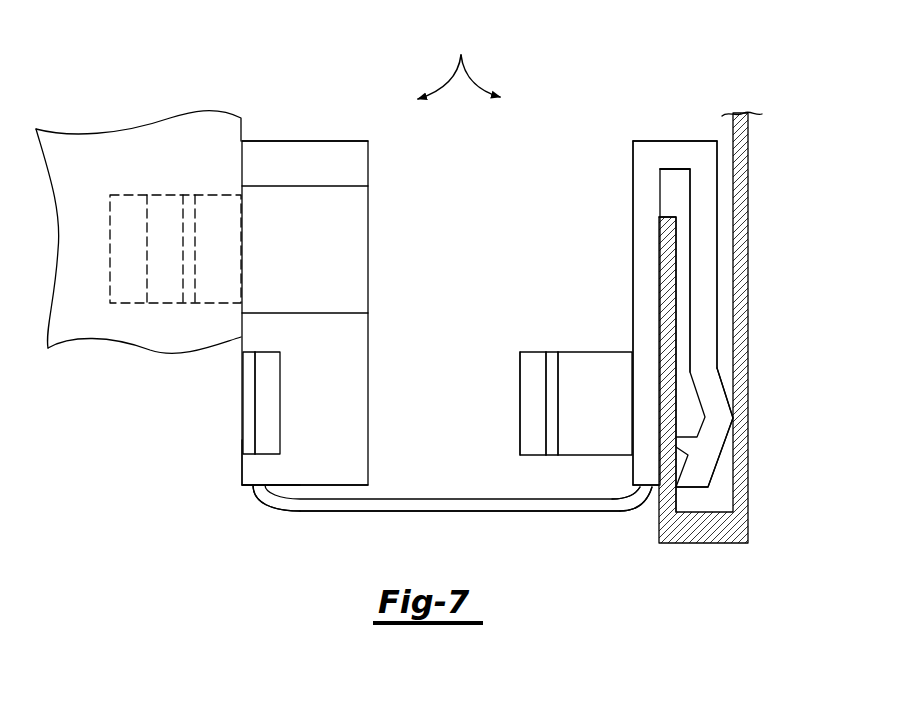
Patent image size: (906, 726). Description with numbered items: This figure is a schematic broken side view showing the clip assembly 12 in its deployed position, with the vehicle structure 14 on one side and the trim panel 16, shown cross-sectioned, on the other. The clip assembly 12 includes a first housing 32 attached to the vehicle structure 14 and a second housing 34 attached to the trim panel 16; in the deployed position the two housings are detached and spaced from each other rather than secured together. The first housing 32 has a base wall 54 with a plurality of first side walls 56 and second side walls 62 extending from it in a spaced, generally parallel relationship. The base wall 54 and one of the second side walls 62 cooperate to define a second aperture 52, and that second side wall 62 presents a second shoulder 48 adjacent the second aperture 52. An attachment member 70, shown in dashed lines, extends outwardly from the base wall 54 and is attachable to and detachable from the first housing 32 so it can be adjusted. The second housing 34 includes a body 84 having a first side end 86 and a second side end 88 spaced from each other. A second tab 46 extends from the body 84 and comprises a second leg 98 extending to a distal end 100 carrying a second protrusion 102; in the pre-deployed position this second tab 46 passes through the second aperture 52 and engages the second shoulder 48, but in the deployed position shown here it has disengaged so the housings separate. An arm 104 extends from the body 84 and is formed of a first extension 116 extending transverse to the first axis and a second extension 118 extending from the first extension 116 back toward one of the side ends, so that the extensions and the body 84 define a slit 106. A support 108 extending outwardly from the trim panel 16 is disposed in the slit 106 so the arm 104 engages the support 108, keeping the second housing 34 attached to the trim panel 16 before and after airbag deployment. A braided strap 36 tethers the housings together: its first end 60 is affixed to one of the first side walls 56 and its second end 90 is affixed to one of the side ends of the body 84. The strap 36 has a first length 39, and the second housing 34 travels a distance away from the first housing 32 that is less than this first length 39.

The clip assembly 12 is at (461, 55).
The vehicle structure 14 is at (117, 157).
The trim panel 16 is at (751, 120).
The first housing 32 is at (291, 158).
The second housing 34 is at (664, 150).
The strap 36 is at (519, 511).
The first length 39 is at (422, 511).
The second tab 46 is at (546, 360).
The second shoulder 48 is at (272, 395).
The second aperture 52 is at (268, 412).
The base wall 54 is at (242, 462).
The first side walls 56 is at (261, 140).
The first end 60 is at (262, 492).
The second side walls 62 is at (335, 325).
The attachment member 70 is at (147, 255).
The body 84 is at (633, 232).
The first side end 86 is at (652, 490).
The second side end 88 is at (640, 141).
The second end 90 is at (635, 493).
The second leg 98 is at (584, 360).
The distal end 100 is at (560, 410).
The second protrusion 102 is at (528, 405).
The arm 104 is at (717, 141).
The slit 106 is at (672, 200).
The support 108 is at (670, 280).
The first extension 116 is at (687, 158).
The second extension 118 is at (710, 336).